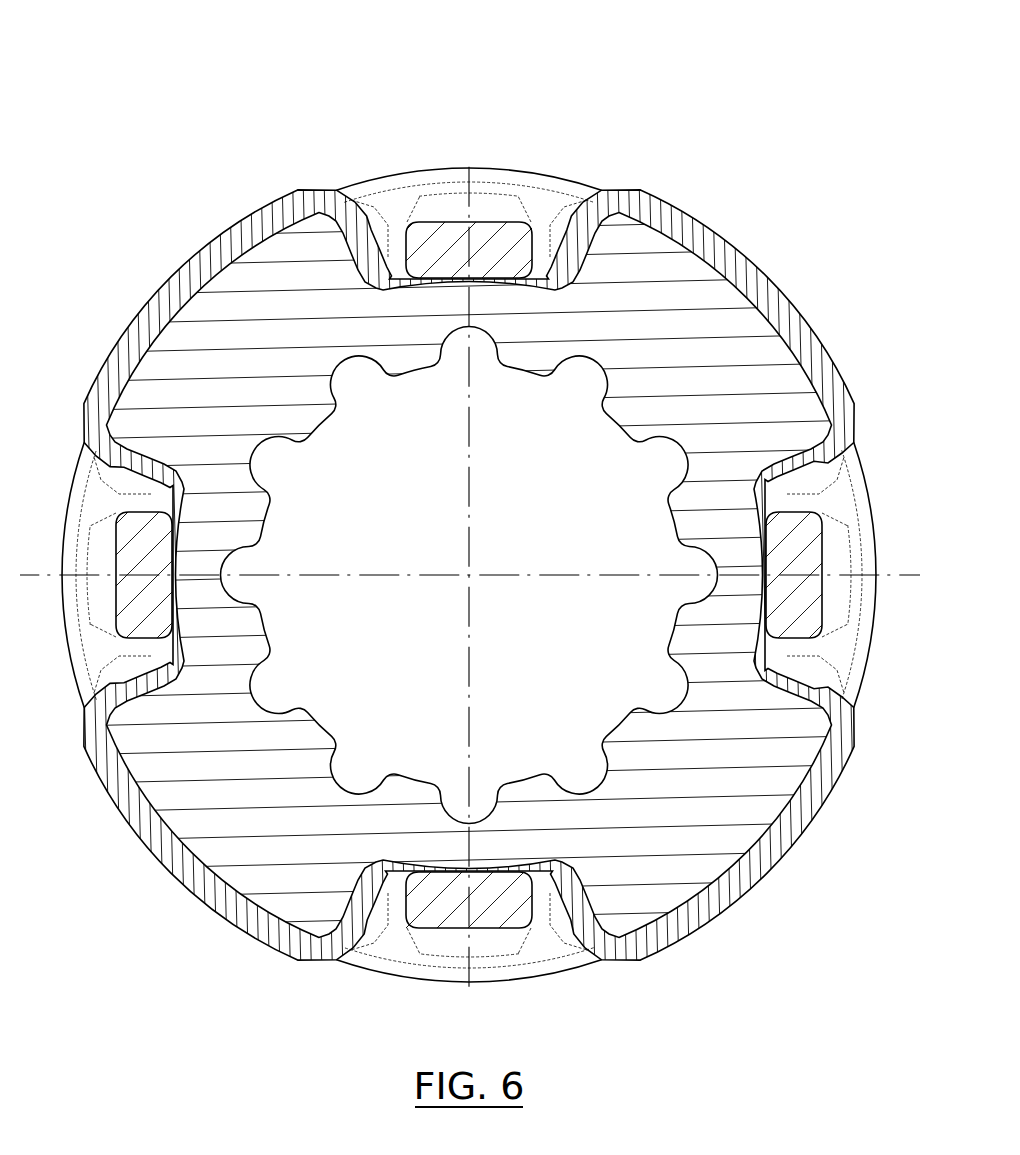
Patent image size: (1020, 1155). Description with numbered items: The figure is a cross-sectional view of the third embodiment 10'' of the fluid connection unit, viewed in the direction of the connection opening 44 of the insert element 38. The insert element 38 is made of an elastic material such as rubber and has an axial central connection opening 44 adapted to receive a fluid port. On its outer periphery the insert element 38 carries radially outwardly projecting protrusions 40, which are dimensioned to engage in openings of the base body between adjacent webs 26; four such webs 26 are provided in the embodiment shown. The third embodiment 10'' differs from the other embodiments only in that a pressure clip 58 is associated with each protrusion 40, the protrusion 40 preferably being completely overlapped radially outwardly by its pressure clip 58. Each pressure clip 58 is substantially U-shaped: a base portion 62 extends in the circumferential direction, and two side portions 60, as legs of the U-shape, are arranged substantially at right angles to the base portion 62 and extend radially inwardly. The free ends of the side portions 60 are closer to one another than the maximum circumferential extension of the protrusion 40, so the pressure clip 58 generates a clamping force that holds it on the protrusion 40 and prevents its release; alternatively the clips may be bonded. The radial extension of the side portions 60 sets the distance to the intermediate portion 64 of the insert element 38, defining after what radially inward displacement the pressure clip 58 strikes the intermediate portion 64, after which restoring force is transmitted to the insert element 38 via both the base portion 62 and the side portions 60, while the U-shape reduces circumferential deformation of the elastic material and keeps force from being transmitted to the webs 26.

The third embodiment of the fluid connection unit 10'' is at (470, 500).
The web 26 is at (492, 237).
The insert element 38 is at (512, 305).
The protrusion 40 is at (752, 355).
The connection opening 44 is at (371, 670).
The pressure clip 58 is at (246, 240).
The side portion 60 is at (365, 233).
The base portion 62 is at (170, 305).
The intermediate portion 64 is at (735, 522).